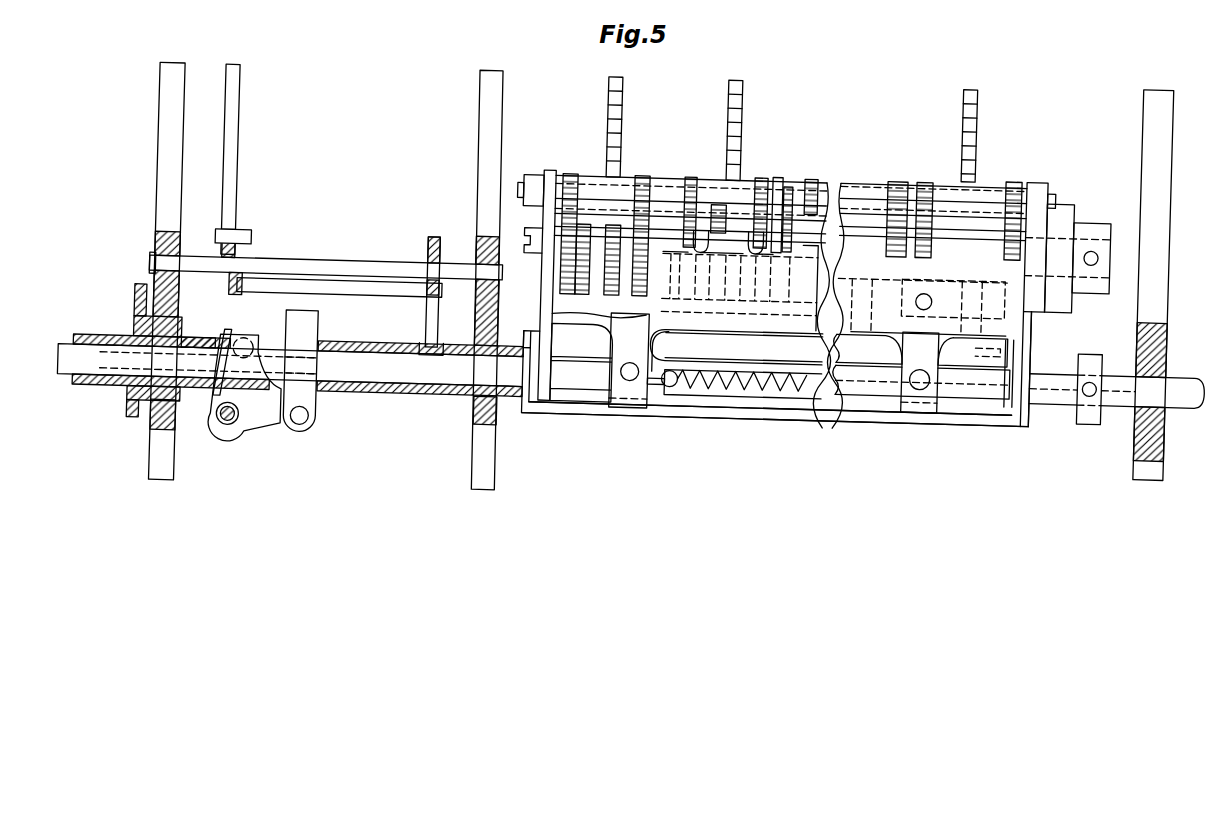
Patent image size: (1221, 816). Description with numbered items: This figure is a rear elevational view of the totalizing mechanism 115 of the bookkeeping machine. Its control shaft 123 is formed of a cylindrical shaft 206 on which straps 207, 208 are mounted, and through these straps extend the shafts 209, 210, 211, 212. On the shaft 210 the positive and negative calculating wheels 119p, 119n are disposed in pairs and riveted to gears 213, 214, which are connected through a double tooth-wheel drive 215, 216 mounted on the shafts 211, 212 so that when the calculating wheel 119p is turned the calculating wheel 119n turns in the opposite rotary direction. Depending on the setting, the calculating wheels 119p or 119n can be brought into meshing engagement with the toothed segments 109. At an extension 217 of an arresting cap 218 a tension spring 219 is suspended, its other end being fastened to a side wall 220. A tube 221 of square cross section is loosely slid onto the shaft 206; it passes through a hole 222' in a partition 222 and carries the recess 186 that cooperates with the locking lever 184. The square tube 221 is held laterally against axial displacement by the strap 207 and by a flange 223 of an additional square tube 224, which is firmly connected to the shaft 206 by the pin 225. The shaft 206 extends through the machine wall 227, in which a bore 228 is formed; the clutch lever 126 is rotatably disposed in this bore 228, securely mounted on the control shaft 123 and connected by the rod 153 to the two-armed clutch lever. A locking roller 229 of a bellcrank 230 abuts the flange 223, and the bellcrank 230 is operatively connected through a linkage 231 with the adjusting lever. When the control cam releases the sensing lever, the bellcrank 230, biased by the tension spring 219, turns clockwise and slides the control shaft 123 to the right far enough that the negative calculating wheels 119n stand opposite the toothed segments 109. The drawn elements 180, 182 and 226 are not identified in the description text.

The toothed segments 109 is at (963, 98).
The totalizing mechanism 115 is at (927, 307).
The negative calculating wheel 119n is at (703, 182).
The positive calculating wheel 119p is at (750, 178).
The control shaft 123 is at (576, 401).
The clutch lever 126 is at (135, 331).
The rod 153 is at (150, 435).
The vertical bar 180 is at (229, 115).
The connecting rod 182 is at (322, 270).
The locking lever 184 is at (430, 345).
The recess 186 is at (432, 353).
The cylindrical shaft 206 is at (597, 395).
The strap 207 is at (543, 172).
The strap 208 is at (1016, 169).
The shaft 209 is at (750, 361).
The shaft 210 is at (826, 257).
The shaft 211 is at (835, 180).
The shaft 212 is at (875, 187).
The gear 213 is at (682, 393).
The gear 214 is at (784, 395).
The double tooth-wheel drive 215 is at (684, 177).
The double tooth-wheel drive 216 is at (777, 181).
The extension 217 is at (644, 399).
The arresting cap 218 is at (981, 320).
The tension spring 219 is at (820, 389).
The side wall 220 is at (1136, 406).
The tube 221 is at (507, 403).
The partition 222 is at (458, 279).
The hole 222' is at (454, 426).
The flange 223 is at (227, 350).
The additional tube 224 is at (195, 341).
The pin 225 is at (206, 421).
The sleeve 226 is at (126, 402).
The machine wall 227 is at (165, 130).
The bore 228 is at (186, 412).
The locking roller 229 is at (247, 355).
The bellcrank 230 is at (267, 424).
The linkage 231 is at (311, 330).